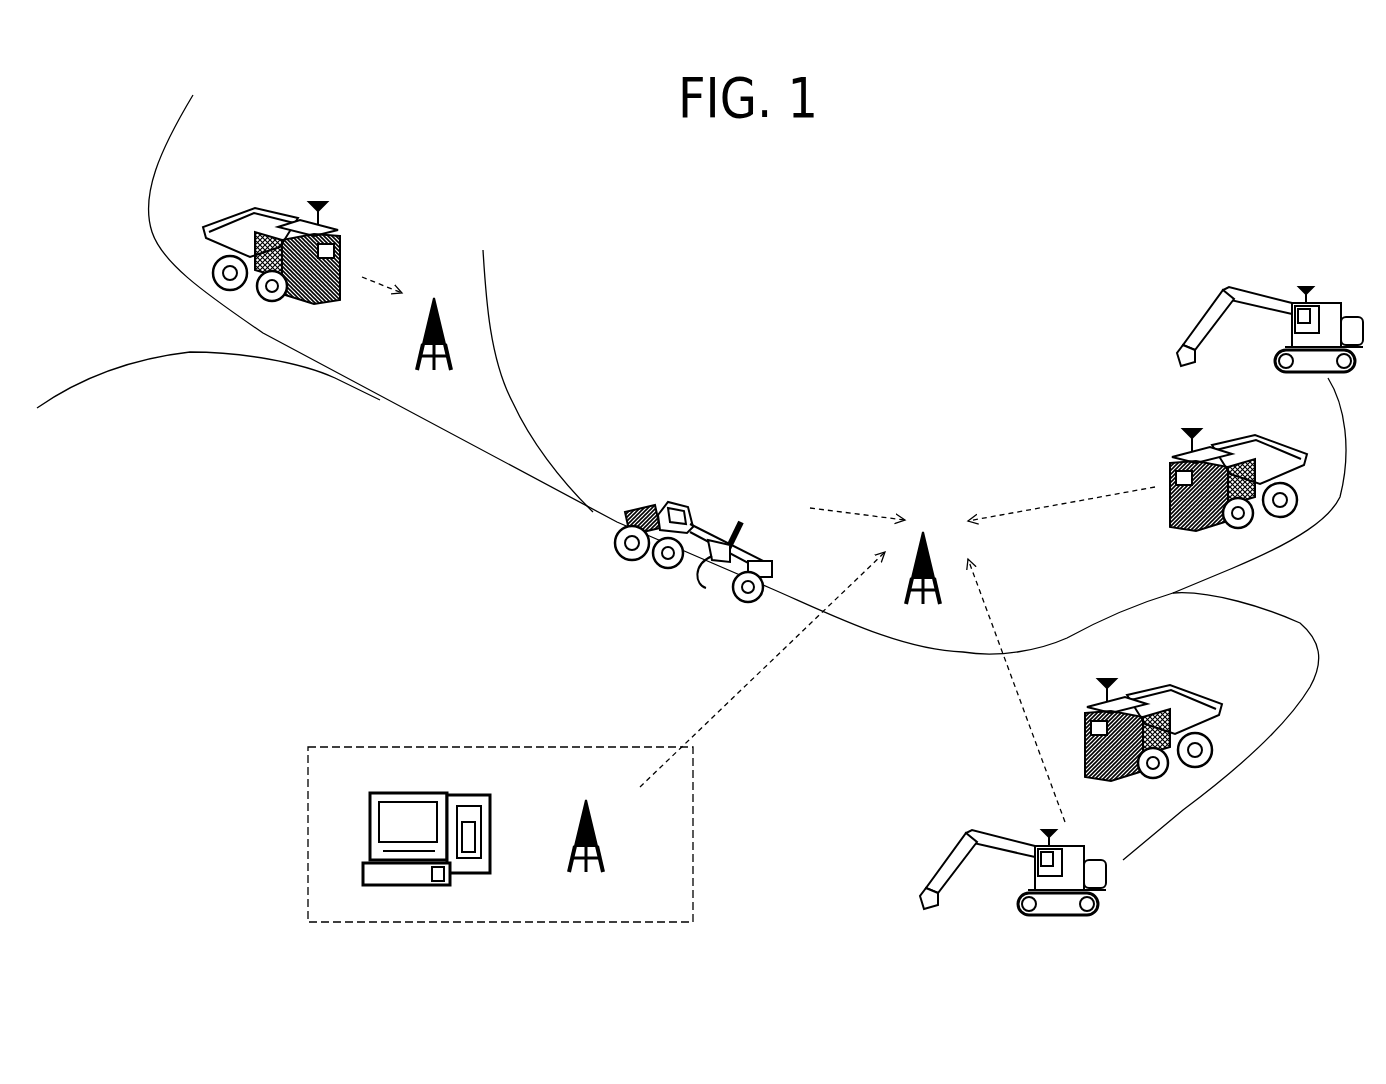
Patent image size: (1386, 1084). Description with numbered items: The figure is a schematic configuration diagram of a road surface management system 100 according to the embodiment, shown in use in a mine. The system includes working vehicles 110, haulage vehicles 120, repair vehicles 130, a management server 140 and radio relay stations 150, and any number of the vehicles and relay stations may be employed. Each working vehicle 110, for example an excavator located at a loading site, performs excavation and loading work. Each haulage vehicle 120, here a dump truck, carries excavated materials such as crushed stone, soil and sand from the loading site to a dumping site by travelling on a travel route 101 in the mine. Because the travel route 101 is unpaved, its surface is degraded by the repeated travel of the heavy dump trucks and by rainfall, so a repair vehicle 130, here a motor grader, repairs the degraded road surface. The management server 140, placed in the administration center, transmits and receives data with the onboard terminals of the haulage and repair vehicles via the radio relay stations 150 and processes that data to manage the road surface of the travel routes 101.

The road surface management system 100 is at (847, 237).
The travel route 101 is at (691, 477).
The working vehicle 110 is at (1087, 556).
The haulage vehicle 120 is at (755, 441).
The repair vehicle 130 is at (693, 492).
The management server 140 is at (500, 793).
The radio relay station 150 is at (758, 496).